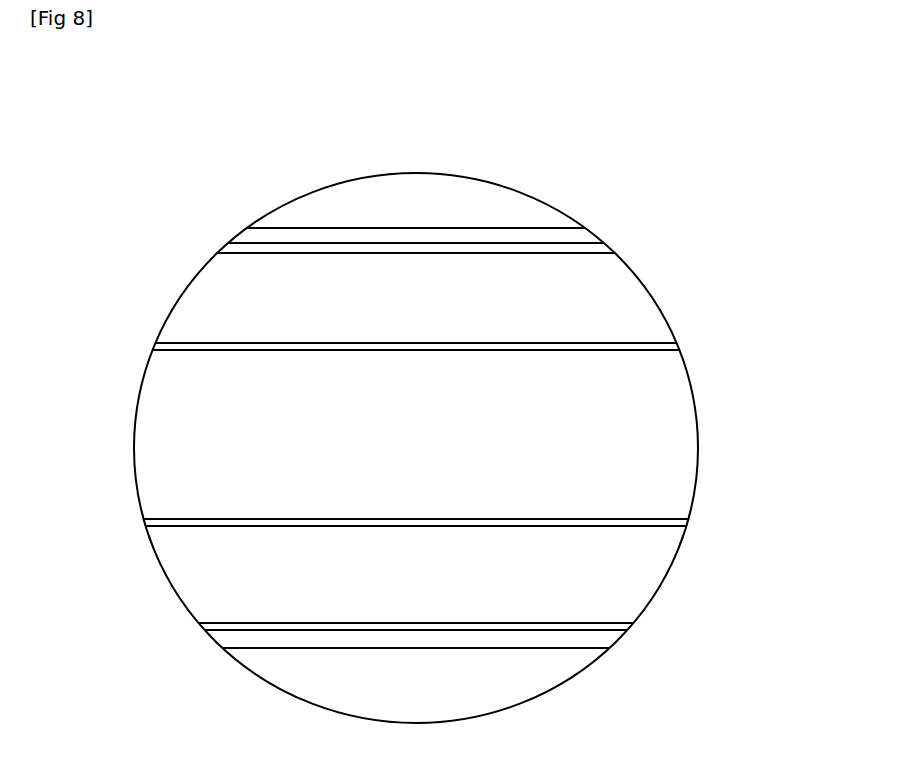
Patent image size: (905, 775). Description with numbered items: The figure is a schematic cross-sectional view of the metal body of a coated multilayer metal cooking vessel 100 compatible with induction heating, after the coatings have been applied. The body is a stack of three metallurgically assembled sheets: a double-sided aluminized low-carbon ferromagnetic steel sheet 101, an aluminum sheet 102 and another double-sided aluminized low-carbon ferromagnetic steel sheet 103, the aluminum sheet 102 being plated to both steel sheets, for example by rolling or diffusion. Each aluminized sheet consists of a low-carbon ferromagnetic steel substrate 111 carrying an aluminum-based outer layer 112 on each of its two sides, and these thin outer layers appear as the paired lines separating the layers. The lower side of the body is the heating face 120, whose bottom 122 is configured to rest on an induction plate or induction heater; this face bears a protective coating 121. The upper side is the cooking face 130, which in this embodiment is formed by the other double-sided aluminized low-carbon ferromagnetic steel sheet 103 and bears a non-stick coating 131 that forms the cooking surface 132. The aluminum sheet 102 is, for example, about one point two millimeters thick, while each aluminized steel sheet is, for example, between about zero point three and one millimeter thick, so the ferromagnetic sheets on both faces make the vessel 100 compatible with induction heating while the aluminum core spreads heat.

The coated multilayer metal cooking vessel 100 is at (178, 650).
The double-sided aluminized low-carbon ferromagnetic steel sheet 101 is at (622, 583).
The aluminum sheet 102 is at (640, 428).
The other double-sided aluminized low-carbon ferromagnetic steel sheet 103 is at (588, 295).
The low-carbon ferromagnetic steel substrate 111 is at (627, 300).
The aluminum-based outer layer 112 is at (598, 247).
The heating face 120 is at (416, 702).
The protective coating 121 is at (433, 640).
The bottom 122 is at (330, 648).
The cooking face 130 is at (428, 173).
The non-stick coating 131 is at (549, 238).
The cooking surface 132 is at (493, 228).